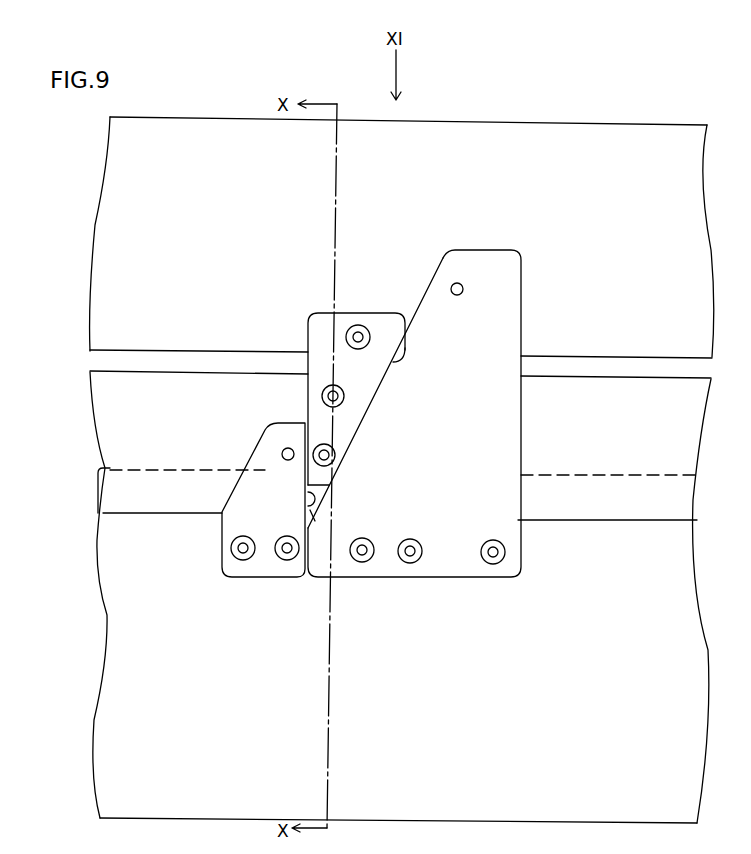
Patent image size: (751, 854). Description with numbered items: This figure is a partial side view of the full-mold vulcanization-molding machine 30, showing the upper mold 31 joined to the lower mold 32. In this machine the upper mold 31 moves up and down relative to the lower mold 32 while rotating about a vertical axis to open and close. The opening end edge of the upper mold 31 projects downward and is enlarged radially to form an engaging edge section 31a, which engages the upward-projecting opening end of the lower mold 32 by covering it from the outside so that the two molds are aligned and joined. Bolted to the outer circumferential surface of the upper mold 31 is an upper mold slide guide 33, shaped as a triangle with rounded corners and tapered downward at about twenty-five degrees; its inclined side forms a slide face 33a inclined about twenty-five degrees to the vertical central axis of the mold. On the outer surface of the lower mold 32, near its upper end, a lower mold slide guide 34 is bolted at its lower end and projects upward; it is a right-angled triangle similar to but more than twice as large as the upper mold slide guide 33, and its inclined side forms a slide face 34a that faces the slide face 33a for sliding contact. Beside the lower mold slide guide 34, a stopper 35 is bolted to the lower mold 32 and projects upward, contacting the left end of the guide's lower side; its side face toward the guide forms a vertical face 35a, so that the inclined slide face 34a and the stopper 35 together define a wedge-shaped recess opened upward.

The full-mold vulcanization-molding machine 30 is at (220, 83).
The upper mold 31 is at (118, 247).
The engaging edge section 31a is at (125, 492).
The lower mold 32 is at (112, 672).
The upper mold slide guide 33 is at (318, 338).
The slide face 33a is at (400, 346).
The lower mold slide guide 34 is at (505, 413).
The slide face 34a is at (432, 284).
The stopper 35 is at (237, 521).
The vertical face 35a is at (306, 490).